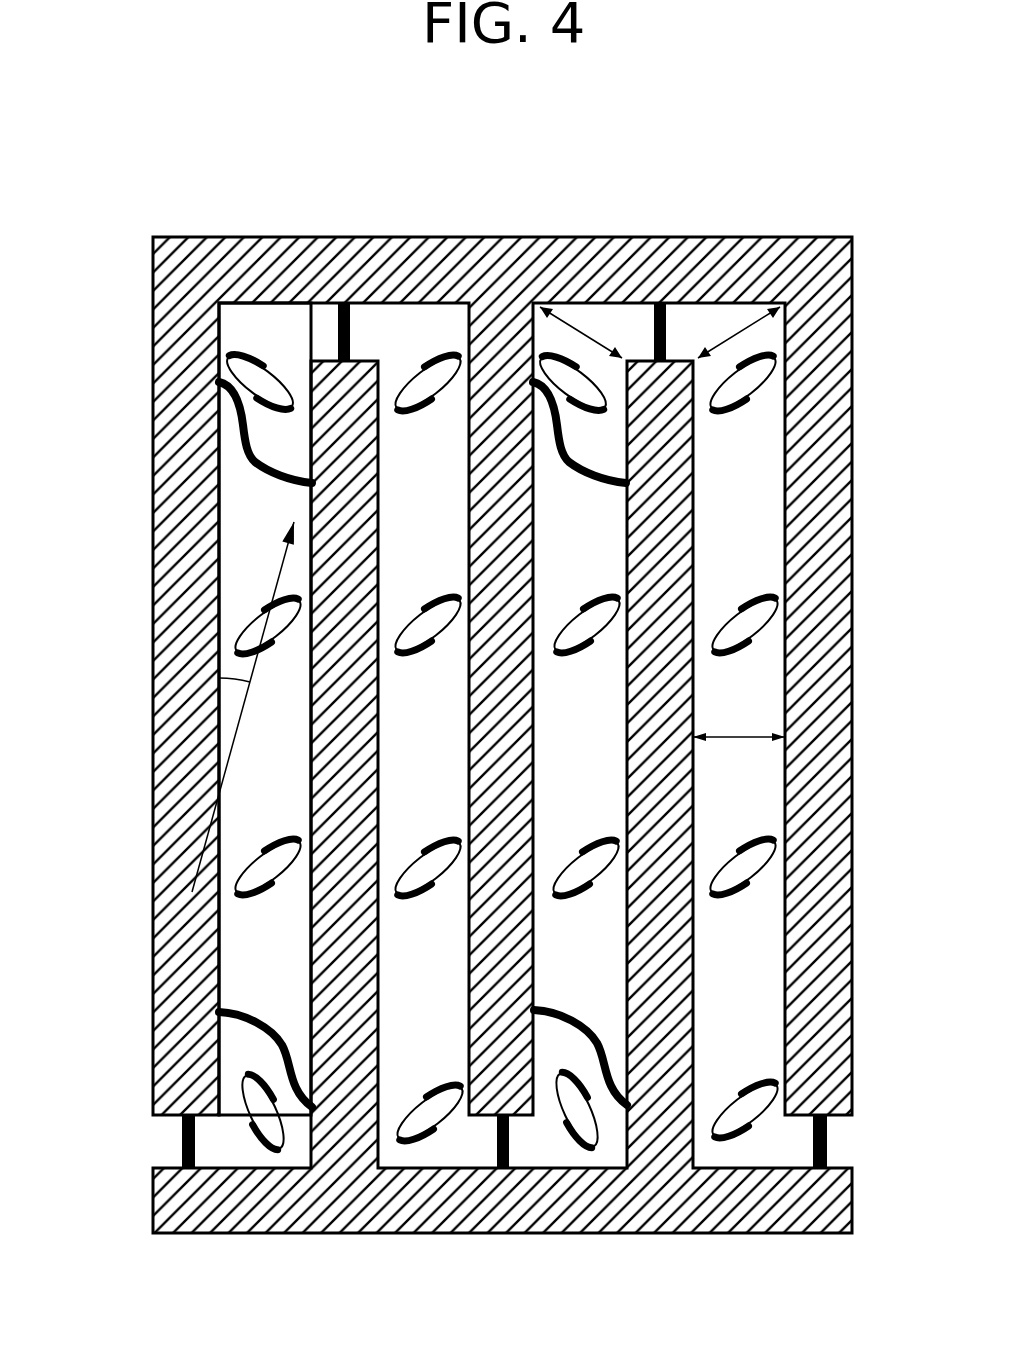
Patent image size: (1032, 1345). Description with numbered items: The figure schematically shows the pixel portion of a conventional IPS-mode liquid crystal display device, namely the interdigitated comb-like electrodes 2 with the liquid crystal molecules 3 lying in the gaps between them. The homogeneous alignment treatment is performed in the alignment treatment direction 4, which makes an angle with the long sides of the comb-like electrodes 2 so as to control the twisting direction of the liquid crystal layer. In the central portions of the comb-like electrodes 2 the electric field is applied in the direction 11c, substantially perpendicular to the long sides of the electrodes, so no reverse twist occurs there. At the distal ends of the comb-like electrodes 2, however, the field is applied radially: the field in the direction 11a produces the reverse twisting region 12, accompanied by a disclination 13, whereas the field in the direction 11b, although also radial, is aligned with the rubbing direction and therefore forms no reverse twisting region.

The comb-like electrodes 2 is at (830, 1057).
The liquid crystal molecules 3 is at (777, 847).
The alignment treatment direction 4 is at (281, 567).
The direction of electric field 11a is at (582, 331).
The direction of electric field 11b is at (724, 338).
The direction of electric field 11c is at (738, 736).
The reverse twisting region 12 is at (287, 352).
The disclination 13 is at (253, 458).